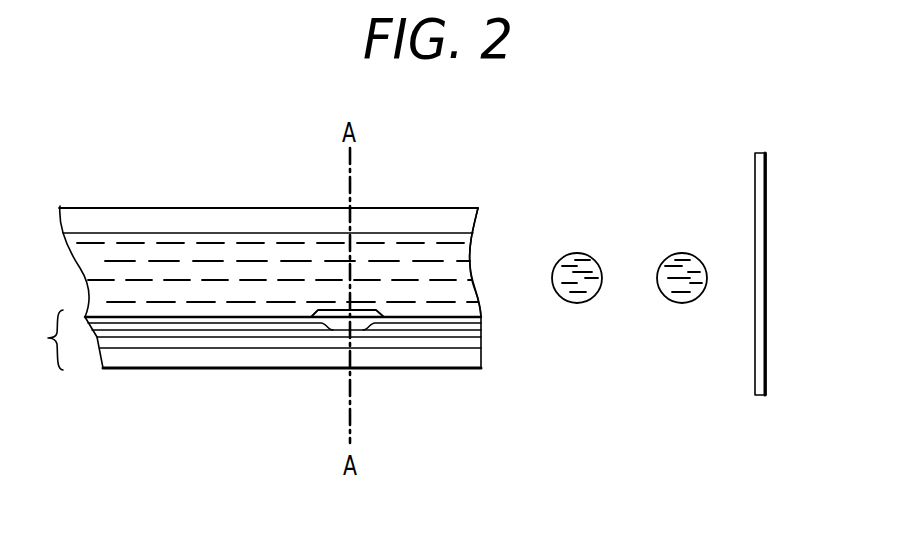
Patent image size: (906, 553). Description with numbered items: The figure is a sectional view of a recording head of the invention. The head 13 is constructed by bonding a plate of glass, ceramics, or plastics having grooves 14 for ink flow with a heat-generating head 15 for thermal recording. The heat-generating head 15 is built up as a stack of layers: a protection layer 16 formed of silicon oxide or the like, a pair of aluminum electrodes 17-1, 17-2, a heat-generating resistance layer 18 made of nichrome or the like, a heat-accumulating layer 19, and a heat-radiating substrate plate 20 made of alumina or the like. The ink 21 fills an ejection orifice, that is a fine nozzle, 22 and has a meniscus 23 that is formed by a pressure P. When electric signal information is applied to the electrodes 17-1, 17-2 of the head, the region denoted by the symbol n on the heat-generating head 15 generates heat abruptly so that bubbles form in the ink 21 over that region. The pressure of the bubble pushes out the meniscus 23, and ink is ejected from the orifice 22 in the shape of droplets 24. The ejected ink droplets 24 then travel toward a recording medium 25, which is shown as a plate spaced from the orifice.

The head 13 is at (195, 208).
The grooves 14 is at (257, 240).
The region n is at (343, 309).
The heat-generating head 15 is at (39, 340).
The protection layer 16 is at (127, 318).
The aluminum electrode 17-1 is at (187, 330).
The aluminum electrode 17-2 is at (448, 328).
The heat-generating resistance layer 18 is at (265, 337).
The heat-accumulating layer 19 is at (311, 343).
The heat-radiating substrate plate 20 is at (400, 362).
The ink 21 is at (103, 240).
The ejection orifice 22 is at (478, 297).
The meniscus 23 is at (472, 278).
The droplets 24 is at (708, 250).
The recording medium 25 is at (754, 225).